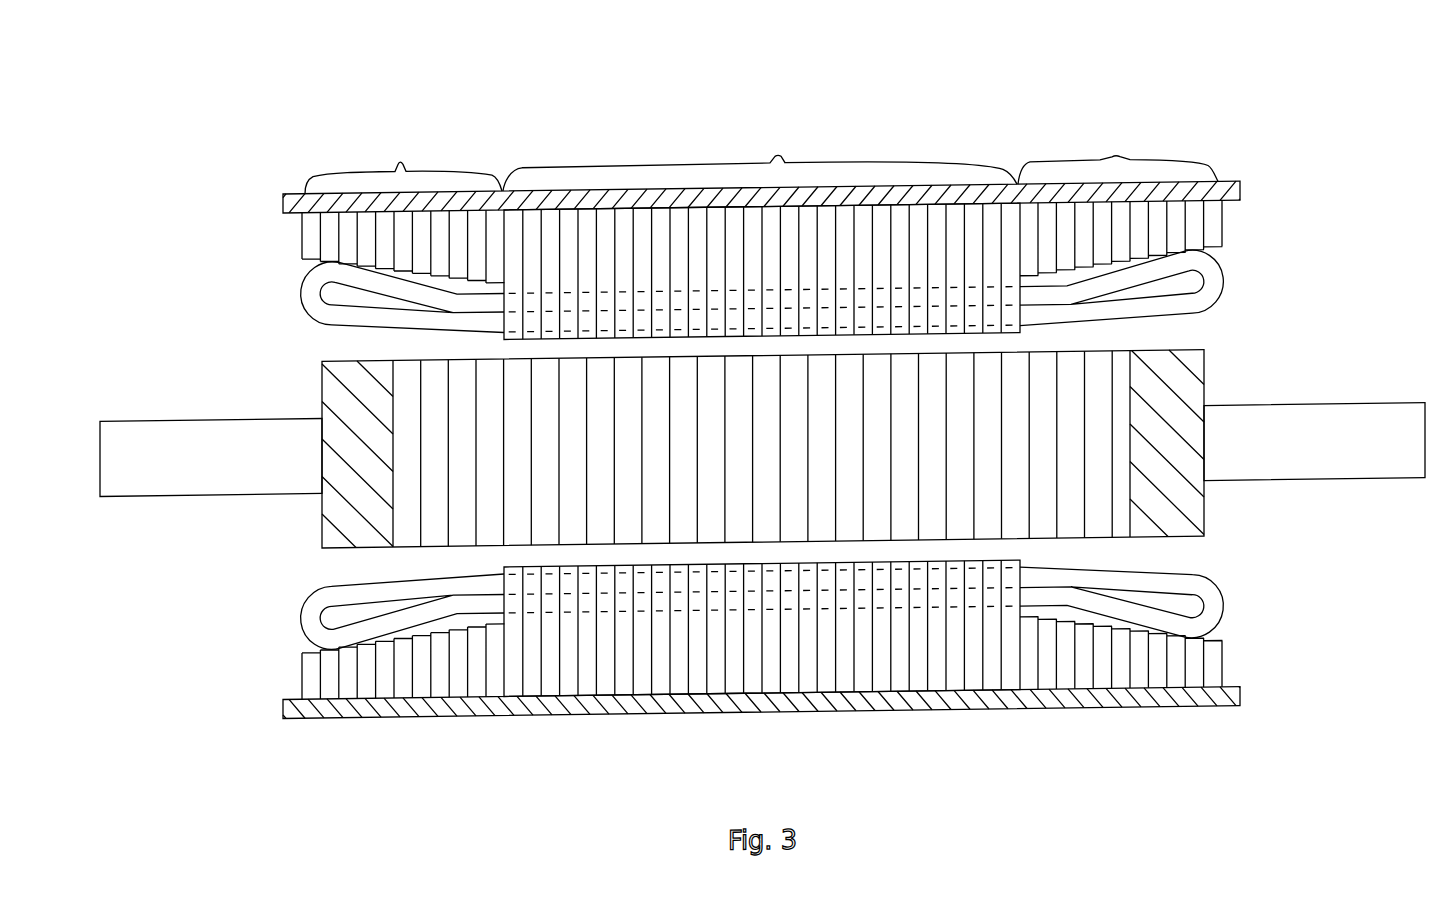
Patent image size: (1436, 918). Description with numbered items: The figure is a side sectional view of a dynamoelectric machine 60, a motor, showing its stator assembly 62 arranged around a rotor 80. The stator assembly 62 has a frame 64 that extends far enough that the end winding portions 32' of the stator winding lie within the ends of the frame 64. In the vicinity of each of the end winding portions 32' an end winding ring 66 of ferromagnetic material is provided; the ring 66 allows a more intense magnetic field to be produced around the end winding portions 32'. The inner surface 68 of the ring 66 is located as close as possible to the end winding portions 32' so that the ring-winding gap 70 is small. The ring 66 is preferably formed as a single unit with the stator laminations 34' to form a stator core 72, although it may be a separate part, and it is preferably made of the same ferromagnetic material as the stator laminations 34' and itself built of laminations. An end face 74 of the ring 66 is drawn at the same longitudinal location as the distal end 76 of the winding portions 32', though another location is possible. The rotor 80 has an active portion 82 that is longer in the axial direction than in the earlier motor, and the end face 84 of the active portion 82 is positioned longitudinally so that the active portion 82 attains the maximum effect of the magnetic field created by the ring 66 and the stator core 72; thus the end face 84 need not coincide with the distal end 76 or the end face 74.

The dynamoelectric machine 60 is at (146, 162).
The stator assembly 62 is at (244, 204).
The frame 64 is at (412, 205).
The end winding ring 66 is at (775, 114).
The stator laminations 34' is at (760, 114).
The stator core 72 is at (808, 230).
The end face 74 is at (300, 241).
The distal end 76 is at (297, 294).
The end winding portions 32' is at (784, 449).
The inner surface 68 is at (388, 638).
The ring-winding gap 70 is at (300, 646).
The rotor 80 is at (762, 453).
The active portion 82 is at (1098, 380).
The end face 84 is at (390, 406).